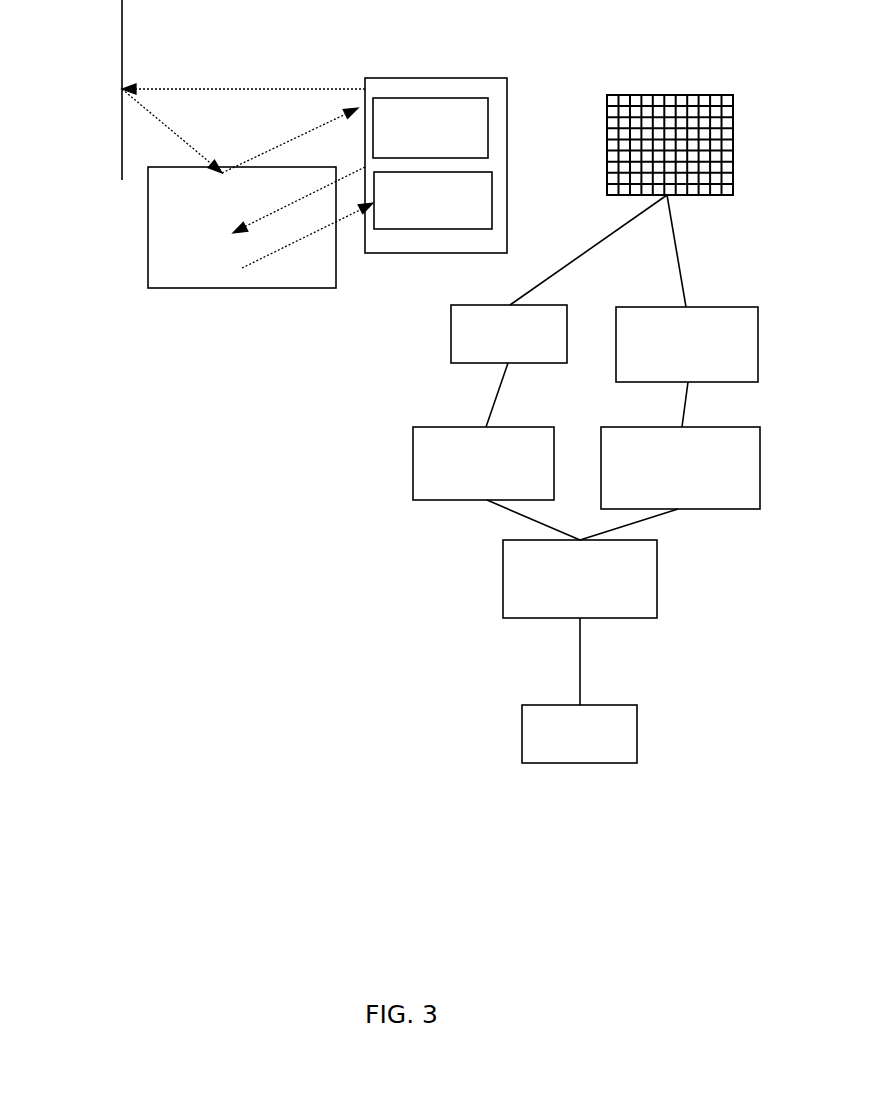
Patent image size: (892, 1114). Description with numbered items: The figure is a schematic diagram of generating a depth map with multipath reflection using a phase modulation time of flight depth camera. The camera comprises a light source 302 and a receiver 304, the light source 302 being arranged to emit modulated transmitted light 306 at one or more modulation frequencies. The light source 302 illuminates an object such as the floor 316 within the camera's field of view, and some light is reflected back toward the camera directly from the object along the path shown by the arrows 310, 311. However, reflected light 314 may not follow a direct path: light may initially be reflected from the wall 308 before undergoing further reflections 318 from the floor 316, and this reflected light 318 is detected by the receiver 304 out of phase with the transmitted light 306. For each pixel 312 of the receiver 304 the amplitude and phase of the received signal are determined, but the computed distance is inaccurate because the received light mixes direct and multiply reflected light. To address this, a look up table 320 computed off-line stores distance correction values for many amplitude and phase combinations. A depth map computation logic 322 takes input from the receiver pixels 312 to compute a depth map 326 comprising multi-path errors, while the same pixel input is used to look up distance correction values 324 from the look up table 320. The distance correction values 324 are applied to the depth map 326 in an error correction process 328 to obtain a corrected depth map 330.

The light source 302 is at (492, 205).
The receiver 304 is at (488, 130).
The transmitted light 306 is at (148, 89).
The wall 308 is at (122, 145).
The direct path arrow 310 is at (330, 181).
The direct path arrow 311 is at (312, 228).
The pixel 312 is at (670, 198).
The reflected light 314 is at (204, 152).
The floor 316 is at (195, 288).
The further reflection 318 is at (287, 137).
The look up table 320 is at (451, 334).
The depth map computation logic 322 is at (758, 345).
The distance correction values 324 is at (413, 462).
The depth map 326 is at (710, 509).
The error correction process 328 is at (503, 572).
The corrected depth map 330 is at (522, 728).